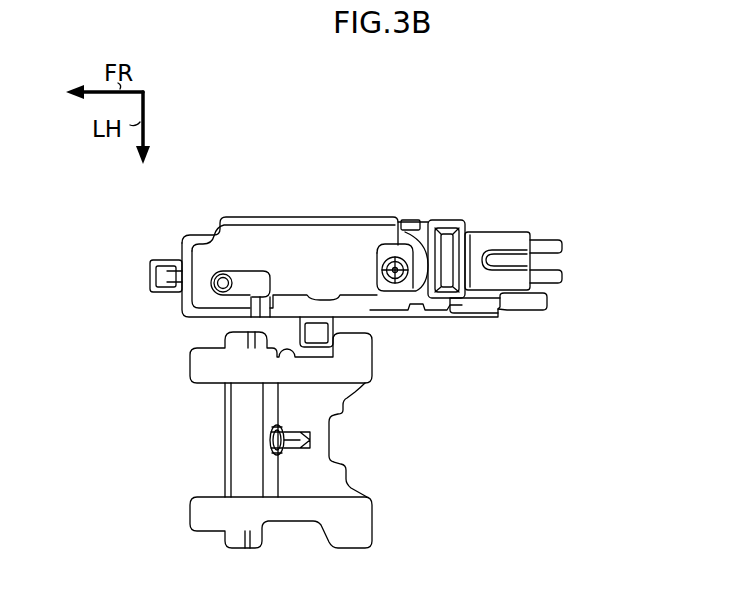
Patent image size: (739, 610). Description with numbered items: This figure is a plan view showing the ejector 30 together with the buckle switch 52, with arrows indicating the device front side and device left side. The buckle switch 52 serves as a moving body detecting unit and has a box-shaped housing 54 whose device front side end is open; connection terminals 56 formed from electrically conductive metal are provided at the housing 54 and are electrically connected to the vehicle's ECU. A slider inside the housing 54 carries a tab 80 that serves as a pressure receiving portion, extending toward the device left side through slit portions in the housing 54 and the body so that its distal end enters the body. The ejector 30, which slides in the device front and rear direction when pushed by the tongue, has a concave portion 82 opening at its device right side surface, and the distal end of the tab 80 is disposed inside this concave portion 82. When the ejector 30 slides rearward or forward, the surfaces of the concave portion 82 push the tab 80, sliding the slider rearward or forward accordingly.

The ejector 30 is at (364, 518).
The buckle switch 52 is at (371, 195).
The housing 54 is at (411, 231).
The connection terminals 56 is at (544, 241).
The tab 80 is at (343, 338).
The concave portion 82 is at (288, 352).